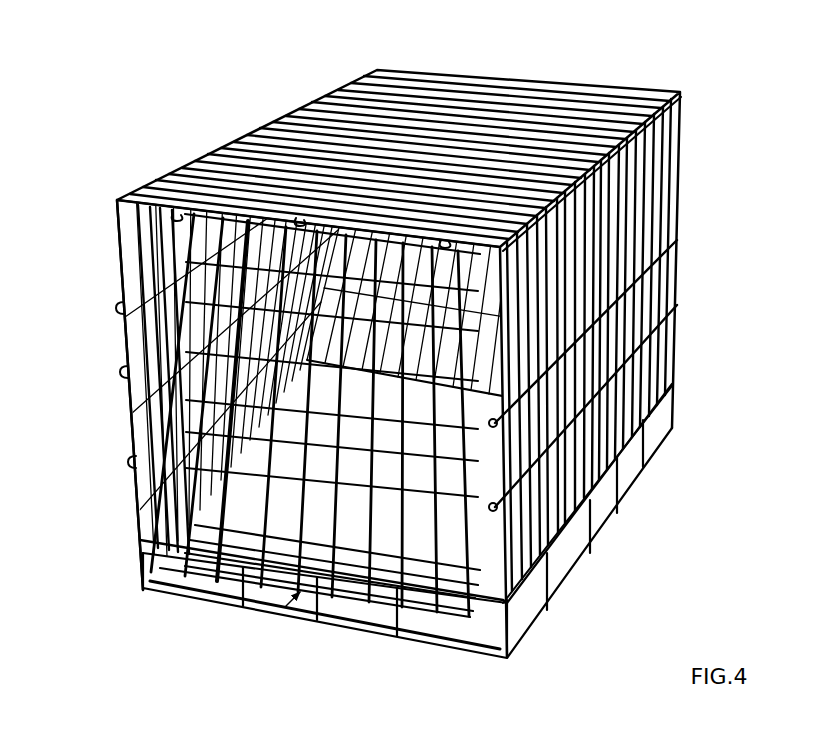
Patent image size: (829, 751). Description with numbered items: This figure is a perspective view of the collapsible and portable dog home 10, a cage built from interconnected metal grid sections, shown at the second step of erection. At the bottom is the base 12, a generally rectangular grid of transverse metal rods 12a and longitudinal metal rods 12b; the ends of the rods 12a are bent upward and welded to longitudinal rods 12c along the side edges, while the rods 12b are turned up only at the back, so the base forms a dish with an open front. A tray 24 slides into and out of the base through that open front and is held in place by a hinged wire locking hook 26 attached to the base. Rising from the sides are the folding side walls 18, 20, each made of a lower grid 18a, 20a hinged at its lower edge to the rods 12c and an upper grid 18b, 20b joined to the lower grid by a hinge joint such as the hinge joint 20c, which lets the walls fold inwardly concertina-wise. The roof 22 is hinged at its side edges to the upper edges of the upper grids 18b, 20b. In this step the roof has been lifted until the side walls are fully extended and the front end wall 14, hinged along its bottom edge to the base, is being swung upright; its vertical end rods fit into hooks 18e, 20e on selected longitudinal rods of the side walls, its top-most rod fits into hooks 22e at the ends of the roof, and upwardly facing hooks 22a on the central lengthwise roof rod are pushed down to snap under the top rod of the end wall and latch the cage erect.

The dog home 10 is at (172, 150).
The base 12 is at (370, 637).
The transverse metal rods 12a is at (138, 578).
The longitudinal metal rods 12b is at (320, 622).
The longitudinal rods 12c is at (617, 483).
The front end wall 14 is at (297, 556).
The side wall 18 is at (118, 345).
The lower grid 18a is at (140, 522).
The upper grid 18b is at (122, 306).
The hooks 18e is at (125, 372).
The side wall 20 is at (694, 300).
The lower grid 20a is at (674, 342).
The upper grid 20b is at (684, 174).
The hinge joint 20c is at (684, 247).
The hooks 20e is at (497, 426).
The roof 22 is at (478, 98).
The upwardly facing hooks 22a is at (300, 216).
The hooks 22e is at (445, 238).
The tray 24 is at (313, 507).
The wire locking hook 26 is at (180, 593).